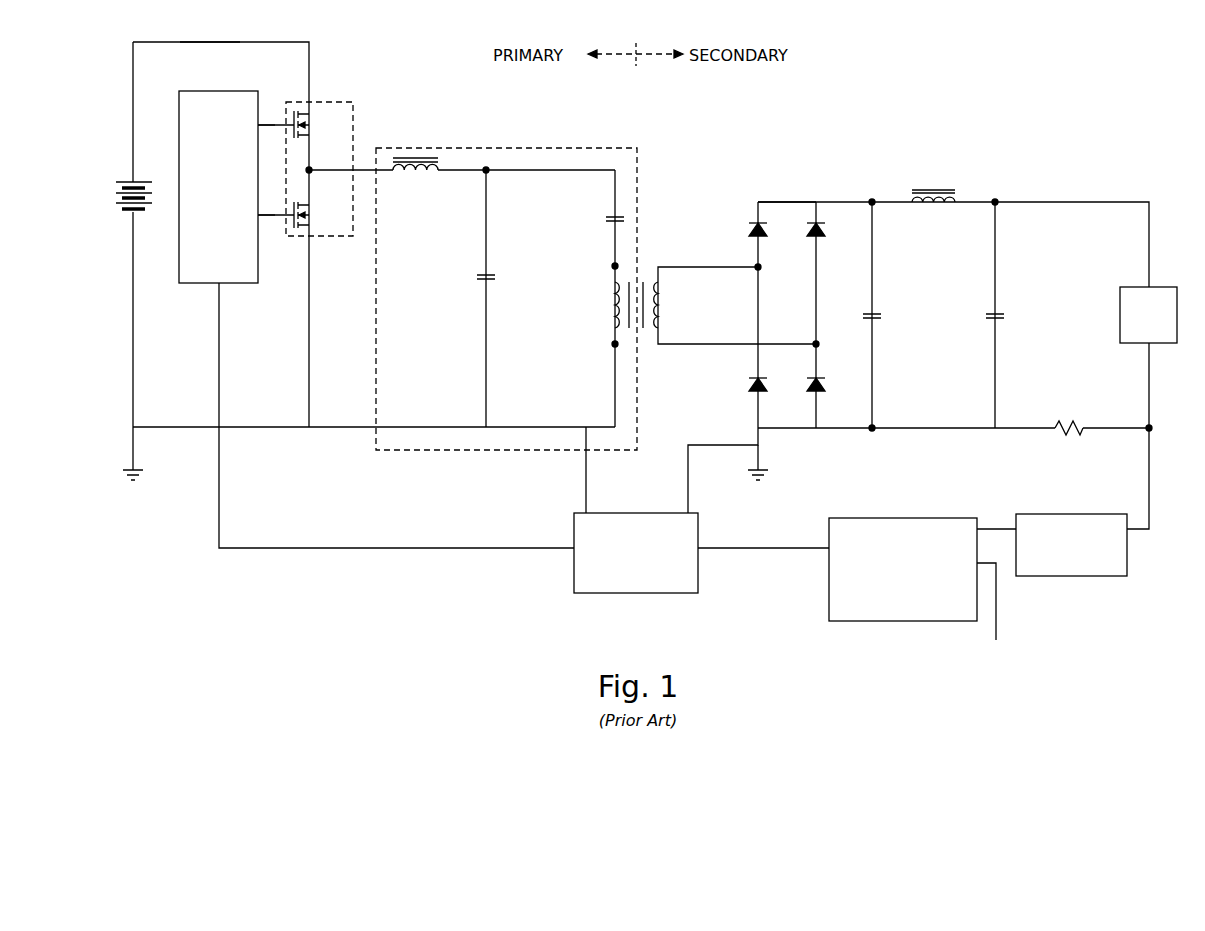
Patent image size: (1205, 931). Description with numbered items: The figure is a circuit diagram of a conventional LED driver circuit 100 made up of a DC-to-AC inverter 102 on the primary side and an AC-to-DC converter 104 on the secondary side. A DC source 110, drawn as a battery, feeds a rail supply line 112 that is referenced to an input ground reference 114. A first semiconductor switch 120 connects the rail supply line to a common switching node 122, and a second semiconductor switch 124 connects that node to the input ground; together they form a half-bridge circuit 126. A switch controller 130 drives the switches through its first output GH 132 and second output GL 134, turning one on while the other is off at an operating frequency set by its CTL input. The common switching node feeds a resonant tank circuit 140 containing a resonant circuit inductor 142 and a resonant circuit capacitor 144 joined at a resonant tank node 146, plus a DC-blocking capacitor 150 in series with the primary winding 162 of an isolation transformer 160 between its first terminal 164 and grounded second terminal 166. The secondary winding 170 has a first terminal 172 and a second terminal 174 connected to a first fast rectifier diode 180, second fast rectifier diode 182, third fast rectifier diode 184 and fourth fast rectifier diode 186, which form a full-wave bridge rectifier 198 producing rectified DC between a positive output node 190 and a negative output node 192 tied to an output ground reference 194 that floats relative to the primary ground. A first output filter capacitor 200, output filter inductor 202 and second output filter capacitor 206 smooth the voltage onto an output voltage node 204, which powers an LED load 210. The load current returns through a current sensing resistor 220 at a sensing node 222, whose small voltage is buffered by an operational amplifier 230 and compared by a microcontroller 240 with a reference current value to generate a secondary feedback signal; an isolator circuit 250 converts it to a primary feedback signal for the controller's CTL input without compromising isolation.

The LED driver circuit 100 is at (1034, 133).
The DC-to-AC inverter 102 is at (572, 138).
The AC-to-DC converter 104 is at (700, 138).
The DC source 110 is at (133, 182).
The VRAIL supply line 112 is at (206, 42).
The input ground reference 114 is at (137, 475).
The first semiconductor switch 120 is at (304, 134).
The common switching node 122 is at (311, 170).
The second semiconductor switch 124 is at (304, 224).
The half-bridge circuit 126 is at (313, 104).
The switch controller 130 is at (237, 197).
The first output (GH) 132 is at (262, 125).
The second output (GL) 134 is at (262, 216).
The resonant tank circuit 140 is at (410, 150).
The resonant circuit inductor 142 is at (428, 172).
The resonant circuit capacitor 144 is at (478, 279).
The resonant tank node 146 is at (489, 172).
The DC-blocking capacitor 150 is at (613, 216).
The isolation transformer 160 is at (646, 266).
The primary winding 162 is at (613, 320).
The first terminal of the primary winding 164 is at (613, 267).
The second terminal of the primary winding 166 is at (613, 344).
The secondary winding 170 is at (657, 307).
The first terminal of the secondary winding 172 is at (760, 268).
The second terminal of the secondary winding 174 is at (814, 344).
The first fast rectifier diode 180 is at (754, 240).
The second fast rectifier diode 182 is at (754, 395).
The third fast rectifier diode 184 is at (812, 240).
The fourth fast rectifier diode 186 is at (812, 395).
The positive output node 190 is at (870, 204).
The negative output node 192 is at (870, 427).
The output ground reference 194 is at (760, 475).
The full-wave bridge rectifier 198 is at (787, 203).
The first output filter capacitor 200 is at (878, 317).
The output filter inductor 202 is at (936, 191).
The output voltage node 204 is at (993, 204).
The second output filter capacitor 206 is at (988, 316).
The LED load 210 is at (1137, 345).
The current sensing resistor 220 is at (1066, 425).
The sensing node 222 is at (1148, 430).
The operational amplifier 230 is at (1087, 578).
The microcontroller 240 is at (847, 622).
The isolator circuit 250 is at (592, 594).